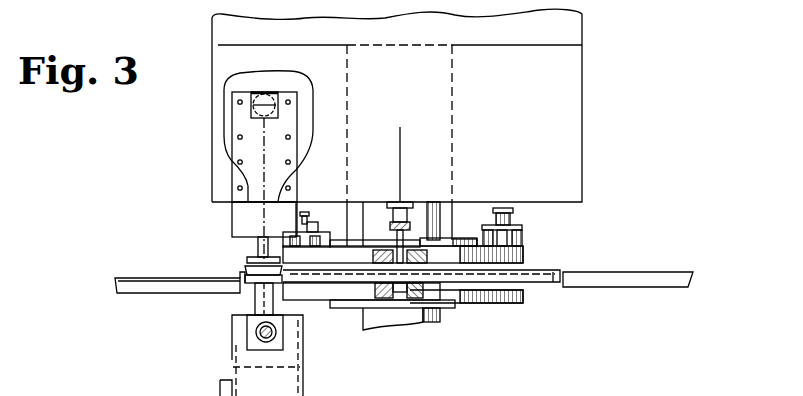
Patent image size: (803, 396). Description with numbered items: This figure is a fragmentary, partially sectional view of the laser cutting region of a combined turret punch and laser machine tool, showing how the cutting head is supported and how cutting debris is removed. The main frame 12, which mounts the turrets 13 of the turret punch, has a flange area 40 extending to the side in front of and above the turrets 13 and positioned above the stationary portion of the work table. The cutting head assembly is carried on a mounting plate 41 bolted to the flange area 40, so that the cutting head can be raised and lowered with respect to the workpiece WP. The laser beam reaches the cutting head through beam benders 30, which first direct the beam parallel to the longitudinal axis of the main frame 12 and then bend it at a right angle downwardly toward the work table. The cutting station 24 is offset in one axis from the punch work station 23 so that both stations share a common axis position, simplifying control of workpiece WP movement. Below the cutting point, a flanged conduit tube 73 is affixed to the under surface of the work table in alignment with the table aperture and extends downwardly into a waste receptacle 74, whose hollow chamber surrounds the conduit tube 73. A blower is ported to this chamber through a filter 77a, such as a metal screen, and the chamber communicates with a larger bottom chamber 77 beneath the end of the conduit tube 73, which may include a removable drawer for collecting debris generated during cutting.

The main frame 12 is at (455, 130).
The turrets 13 is at (525, 260).
The punch work station 23 is at (390, 133).
The cutting station 24 is at (263, 157).
The beam benders 30 is at (565, 395).
The flange area 40 is at (217, 172).
The mounting plate 41 is at (254, 231).
The flanged conduit tube 73 is at (276, 302).
The waste receptacle 74 is at (232, 341).
The bottom chamber 77 is at (257, 331).
The filter 77a is at (196, 388).
The workpiece WP is at (616, 272).